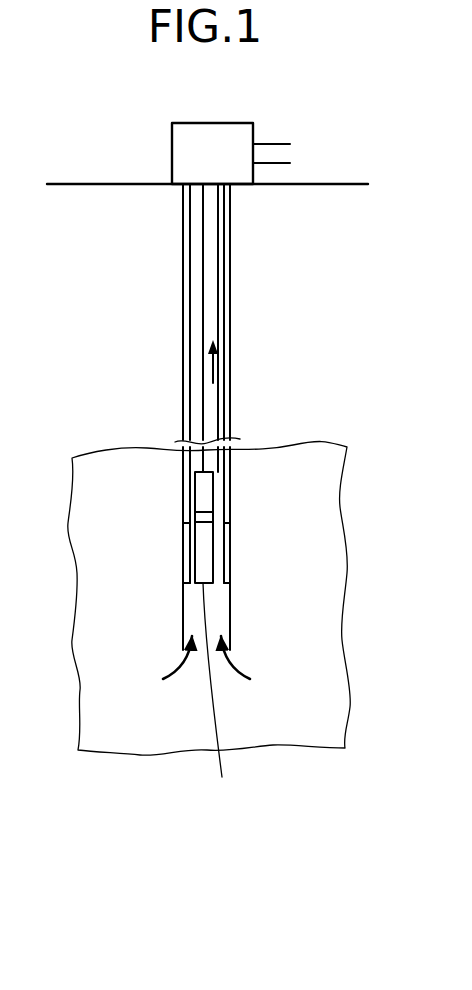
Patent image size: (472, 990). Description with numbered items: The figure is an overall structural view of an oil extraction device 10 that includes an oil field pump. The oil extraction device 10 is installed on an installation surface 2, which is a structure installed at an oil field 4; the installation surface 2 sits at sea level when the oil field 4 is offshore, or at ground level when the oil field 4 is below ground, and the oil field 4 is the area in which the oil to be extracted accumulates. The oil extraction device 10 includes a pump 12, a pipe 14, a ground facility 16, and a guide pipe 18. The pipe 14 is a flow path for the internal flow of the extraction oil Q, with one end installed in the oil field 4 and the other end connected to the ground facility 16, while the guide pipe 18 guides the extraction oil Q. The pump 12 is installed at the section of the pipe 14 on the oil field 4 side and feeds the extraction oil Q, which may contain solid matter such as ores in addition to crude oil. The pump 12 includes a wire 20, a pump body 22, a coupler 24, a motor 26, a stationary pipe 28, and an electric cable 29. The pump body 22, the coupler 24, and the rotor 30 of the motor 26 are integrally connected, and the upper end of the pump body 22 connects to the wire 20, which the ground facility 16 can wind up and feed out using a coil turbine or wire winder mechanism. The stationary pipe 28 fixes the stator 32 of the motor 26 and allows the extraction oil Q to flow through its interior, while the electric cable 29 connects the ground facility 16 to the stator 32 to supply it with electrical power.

The installation surface 2 is at (98, 183).
The oil field 4 is at (246, 640).
The oil extraction device 10 is at (214, 125).
The pump 12 is at (163, 504).
The pipe 14 is at (183, 288).
The ground facility 16 is at (228, 122).
The guide pipe 18 is at (278, 144).
The wire 20 is at (206, 330).
The pump body 22 is at (203, 488).
The coupler 24 is at (203, 518).
The motor 26 is at (218, 695).
The stationary pipe 28 is at (219, 278).
The electric cable 29 is at (226, 239).
The rotor 30 is at (207, 545).
The stator 32 is at (188, 552).
The extraction oil Q is at (180, 658).